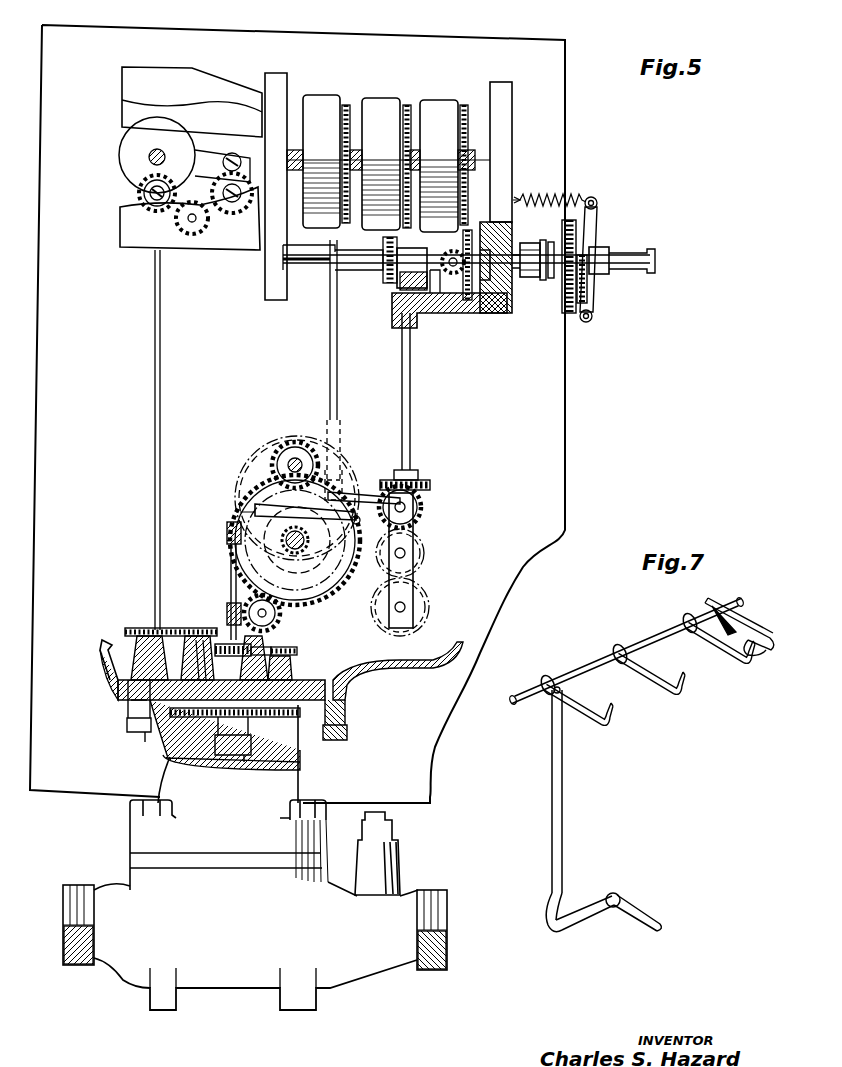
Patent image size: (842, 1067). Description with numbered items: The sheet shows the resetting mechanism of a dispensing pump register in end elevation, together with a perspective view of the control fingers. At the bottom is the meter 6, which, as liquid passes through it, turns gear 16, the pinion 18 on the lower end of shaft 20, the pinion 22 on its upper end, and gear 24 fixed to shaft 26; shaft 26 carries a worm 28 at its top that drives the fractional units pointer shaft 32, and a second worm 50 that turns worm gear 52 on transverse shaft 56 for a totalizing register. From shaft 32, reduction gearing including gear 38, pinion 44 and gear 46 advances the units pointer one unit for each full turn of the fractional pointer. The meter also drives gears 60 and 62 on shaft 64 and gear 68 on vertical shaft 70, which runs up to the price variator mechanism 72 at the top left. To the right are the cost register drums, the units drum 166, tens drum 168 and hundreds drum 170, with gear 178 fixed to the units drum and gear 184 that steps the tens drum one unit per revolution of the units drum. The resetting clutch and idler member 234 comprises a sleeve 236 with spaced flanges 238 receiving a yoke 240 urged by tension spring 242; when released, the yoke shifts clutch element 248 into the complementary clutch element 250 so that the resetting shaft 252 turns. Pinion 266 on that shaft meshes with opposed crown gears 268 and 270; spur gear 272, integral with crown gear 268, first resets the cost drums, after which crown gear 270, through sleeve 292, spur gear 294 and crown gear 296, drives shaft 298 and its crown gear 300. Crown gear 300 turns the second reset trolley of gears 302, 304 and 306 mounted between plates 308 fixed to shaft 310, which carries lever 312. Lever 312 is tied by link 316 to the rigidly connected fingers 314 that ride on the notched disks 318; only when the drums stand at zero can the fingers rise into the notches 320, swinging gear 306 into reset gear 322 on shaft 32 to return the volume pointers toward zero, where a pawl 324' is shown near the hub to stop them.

In FIG. 5, the meter 6 is at (255, 905).
In FIG. 5, the gear 16 is at (253, 718).
In FIG. 5, the pinion 18 is at (330, 716).
In FIG. 5, the shaft 20 is at (285, 682).
In FIG. 5, the pinion 22 is at (297, 652).
In FIG. 5, the gear 24 is at (250, 645).
In FIG. 5, the shaft 26 is at (232, 578).
In FIG. 5, the worm 28 is at (227, 528).
In FIG. 5, the shaft 32 is at (283, 548).
In FIG. 5, the gear 38 is at (290, 398).
In FIG. 5, the pinion 44 is at (290, 452).
In FIG. 5, the gear 46 is at (275, 495).
In FIG. 5, the worm 50 is at (227, 608).
In FIG. 5, the worm gear 52 is at (268, 614).
In FIG. 5, the transverse shaft 56 is at (278, 618).
In FIG. 5, the gear 60 is at (183, 715).
In FIG. 5, the gear 62 is at (194, 634).
In FIG. 5, the shaft 64 is at (132, 687).
In FIG. 5, the gear 68 is at (130, 627).
In FIG. 5, the vertical shaft 70 is at (160, 398).
In FIG. 5, the price variator mechanism 72 is at (106, 153).
In FIG. 5, the units drum 166 is at (444, 106).
In FIG. 5, the tens drum 168 is at (370, 102).
In FIG. 5, the hundreds drum 170 is at (326, 97).
In FIG. 5, the gear 178 is at (462, 130).
In FIG. 5, the gear 184 is at (406, 106).
In FIG. 5, the resetting clutch and idler member 234 is at (570, 320).
In FIG. 5, the sleeve 236 is at (598, 295).
In FIG. 5, the spaced flanges 238 is at (600, 247).
In FIG. 5, the yoke 240 is at (593, 222).
In FIG. 5, the tension spring 242 is at (548, 200).
In FIG. 5, the clutch element 248 is at (545, 243).
In FIG. 5, the complementary clutch element 250 is at (530, 245).
In FIG. 5, the resetting shaft 252 is at (290, 258).
In FIG. 5, the pinion 266 is at (455, 305).
In FIG. 5, the crown gear 268 is at (460, 295).
In FIG. 5, the crown gear 270 is at (441, 285).
In FIG. 5, the spur gear 272 is at (487, 315).
In FIG. 5, the sleeve 292 is at (410, 268).
In FIG. 5, the spur gear 294 is at (374, 264).
In FIG. 5, the crown gear 296 is at (388, 288).
In FIG. 5, the shaft 298 is at (412, 414).
In FIG. 5, the crown gear 300 is at (432, 483).
In FIG. 5, the gear 302 is at (427, 502).
In FIG. 5, the gear 304 is at (425, 545).
In FIG. 5, the gear 306 is at (422, 605).
In FIG. 5, the spaced plates 308 is at (405, 585).
In FIG. 5, the shaft 310 is at (412, 513).
In FIG. 7, the shaft 310 is at (637, 907).
In FIG. 5, the lever 312 is at (362, 493).
In FIG. 7, the lever 312 is at (593, 898).
In FIG. 5, the fingers 314 is at (330, 259).
In FIG. 7, the fingers 314 is at (733, 660).
In FIG. 5, the link 316 is at (330, 328).
In FIG. 7, the link 316 is at (557, 787).
In FIG. 7, the disks 318 is at (760, 647).
In FIG. 7, the peripheral notch 320 is at (741, 640).
In FIG. 5, the reset gear 322 is at (357, 527).
In FIG. 5, the plate 324' is at (269, 502).